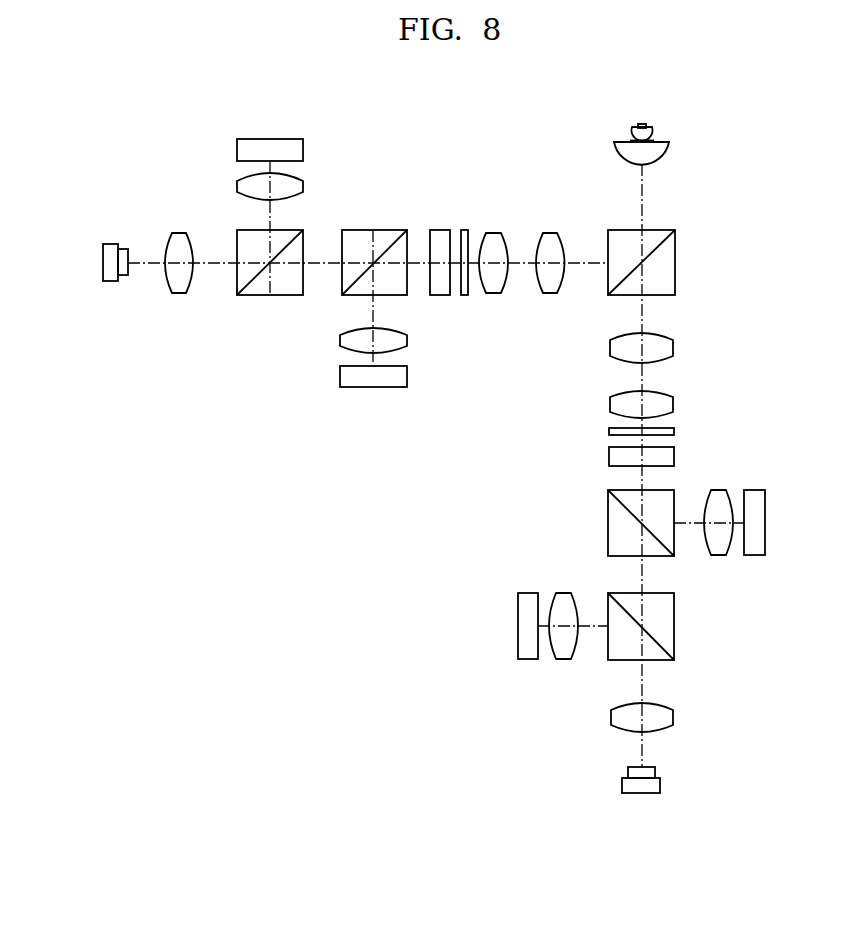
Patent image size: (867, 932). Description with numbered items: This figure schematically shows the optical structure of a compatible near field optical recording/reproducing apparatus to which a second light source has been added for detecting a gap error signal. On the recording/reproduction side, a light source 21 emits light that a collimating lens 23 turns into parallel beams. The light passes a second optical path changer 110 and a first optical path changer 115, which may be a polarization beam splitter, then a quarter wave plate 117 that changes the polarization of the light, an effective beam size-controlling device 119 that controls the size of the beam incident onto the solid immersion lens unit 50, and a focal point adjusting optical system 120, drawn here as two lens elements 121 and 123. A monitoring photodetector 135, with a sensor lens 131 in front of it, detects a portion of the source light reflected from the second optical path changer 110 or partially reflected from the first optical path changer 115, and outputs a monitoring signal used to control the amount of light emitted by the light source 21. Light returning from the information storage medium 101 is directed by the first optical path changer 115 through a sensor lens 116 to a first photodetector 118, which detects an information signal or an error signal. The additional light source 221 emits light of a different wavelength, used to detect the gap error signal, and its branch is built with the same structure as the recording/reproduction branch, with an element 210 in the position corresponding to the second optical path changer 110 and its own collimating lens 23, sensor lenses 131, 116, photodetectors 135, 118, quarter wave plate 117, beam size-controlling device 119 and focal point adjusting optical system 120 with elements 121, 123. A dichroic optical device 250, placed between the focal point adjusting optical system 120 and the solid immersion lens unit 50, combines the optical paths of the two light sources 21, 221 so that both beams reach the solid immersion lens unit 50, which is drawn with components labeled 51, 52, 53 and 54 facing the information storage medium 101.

The light source 21 is at (118, 249).
The collimating lens 23 is at (177, 236).
The monitoring photodetector 135 is at (304, 150).
The sensor lens 131 is at (304, 187).
The second optical path changer 110 is at (245, 297).
The first optical path changer 115 is at (398, 231).
The sensor lens 116 is at (341, 340).
The first photodetector 118 is at (341, 375).
The quarter wave plate 117 is at (440, 231).
The effective beam size-controlling device 119 is at (465, 297).
The focal point adjusting optical system 120 is at (562, 185).
The first objective lens 121 is at (493, 234).
The second objective lens 123 is at (548, 234).
The dichroic optical device 250 is at (676, 252).
The solid immersion lens unit 50 is at (652, 129).
The solid immersion lens 51 is at (655, 156).
The sample chip 52 is at (688, 128).
The sample cup 53 is at (654, 131).
The substrate layer 54 is at (654, 140).
The information storage medium 101 is at (660, 104).
The beam splitter 210 is at (675, 641).
The light source 221 is at (657, 773).